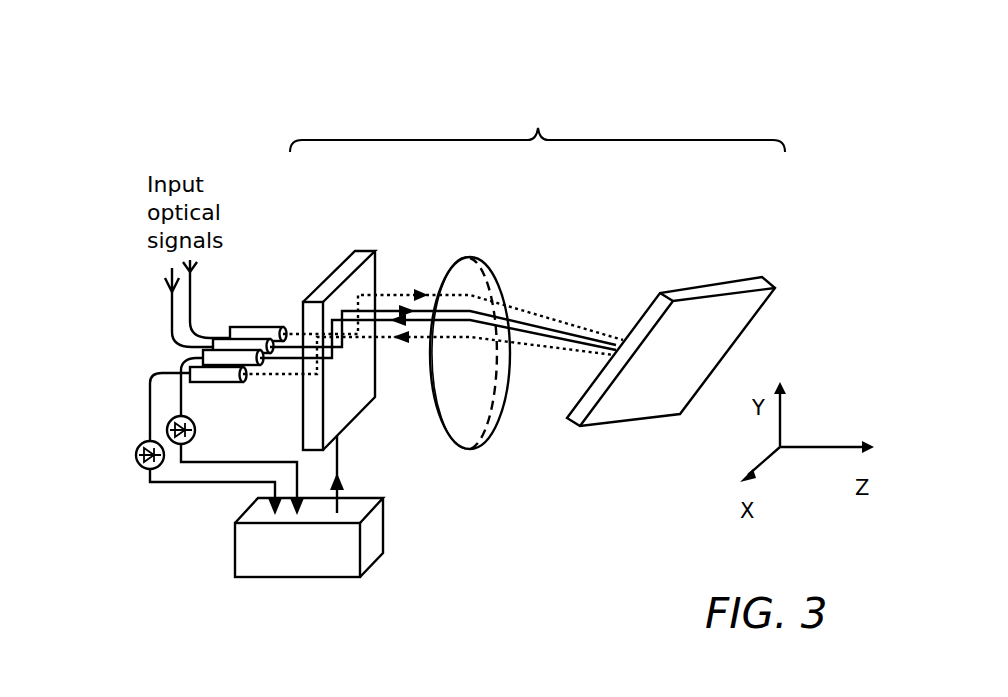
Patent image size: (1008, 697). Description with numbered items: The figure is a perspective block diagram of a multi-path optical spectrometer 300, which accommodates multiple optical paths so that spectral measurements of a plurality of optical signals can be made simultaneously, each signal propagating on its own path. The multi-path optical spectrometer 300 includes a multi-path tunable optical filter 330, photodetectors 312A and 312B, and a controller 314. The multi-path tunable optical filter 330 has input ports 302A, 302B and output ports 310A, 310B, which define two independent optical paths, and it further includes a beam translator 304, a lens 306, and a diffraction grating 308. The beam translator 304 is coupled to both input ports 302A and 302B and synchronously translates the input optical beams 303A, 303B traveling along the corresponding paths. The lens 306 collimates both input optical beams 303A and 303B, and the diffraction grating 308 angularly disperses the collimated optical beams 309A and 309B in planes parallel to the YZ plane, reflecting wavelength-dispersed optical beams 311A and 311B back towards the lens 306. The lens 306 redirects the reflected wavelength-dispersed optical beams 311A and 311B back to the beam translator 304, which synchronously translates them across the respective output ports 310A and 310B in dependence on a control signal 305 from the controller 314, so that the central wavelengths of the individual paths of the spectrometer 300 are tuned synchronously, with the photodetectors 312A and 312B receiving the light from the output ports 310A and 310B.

The multi-path optical spectrometer 300 is at (152, 98).
The multi-path tunable optical filter 330 is at (537, 128).
The input port 302A is at (224, 335).
The input port 302B is at (252, 327).
The input optical beam 303A is at (297, 336).
The input optical beam 303B is at (306, 335).
The beam translator 304 is at (357, 250).
The control signal 305 is at (340, 452).
The lens 306 is at (472, 433).
The diffraction grating 308 is at (638, 402).
The collimated optical beam 309A is at (535, 323).
The collimated optical beam 309B is at (582, 322).
The output port 310A is at (252, 366).
The output port 310B is at (215, 382).
The wavelength-dispersed optical beam 311A is at (414, 323).
The wavelength-dispersed optical beam 311B is at (573, 348).
The photodetector 312A is at (166, 430).
The photodetector 312B is at (136, 455).
The controller 314 is at (280, 563).